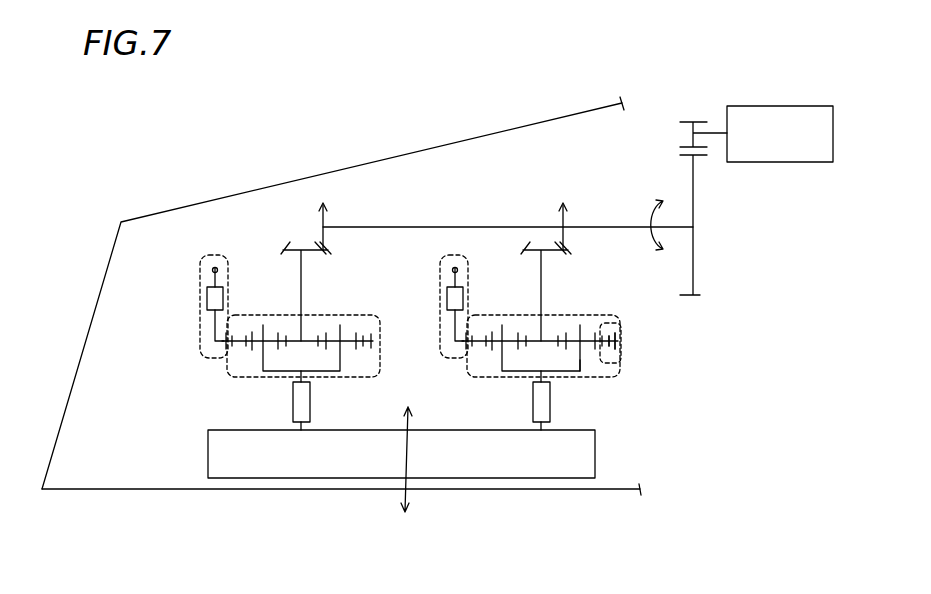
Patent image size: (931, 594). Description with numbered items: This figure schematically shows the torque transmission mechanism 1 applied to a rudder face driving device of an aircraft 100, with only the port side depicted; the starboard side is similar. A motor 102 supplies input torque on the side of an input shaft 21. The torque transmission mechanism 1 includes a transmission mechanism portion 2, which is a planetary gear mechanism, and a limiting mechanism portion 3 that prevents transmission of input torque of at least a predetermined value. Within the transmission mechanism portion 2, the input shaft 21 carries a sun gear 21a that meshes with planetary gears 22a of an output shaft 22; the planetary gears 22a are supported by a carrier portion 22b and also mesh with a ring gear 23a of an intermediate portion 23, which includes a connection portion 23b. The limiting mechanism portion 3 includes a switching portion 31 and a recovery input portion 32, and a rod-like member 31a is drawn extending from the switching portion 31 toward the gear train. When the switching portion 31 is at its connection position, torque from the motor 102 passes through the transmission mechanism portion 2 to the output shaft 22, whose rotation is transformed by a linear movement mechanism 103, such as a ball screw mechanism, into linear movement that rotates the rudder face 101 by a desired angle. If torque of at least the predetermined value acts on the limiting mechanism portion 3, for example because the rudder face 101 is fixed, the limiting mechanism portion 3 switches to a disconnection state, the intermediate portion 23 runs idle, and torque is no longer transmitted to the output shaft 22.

The aircraft 100 is at (385, 158).
The rudder face 101 is at (380, 458).
The motor 102 is at (800, 146).
The linear movement mechanism 103 is at (300, 401).
The torque transmission mechanism 1 is at (273, 229).
The transmission mechanism portion 2 is at (256, 316).
The limiting mechanism portion 3 is at (230, 280).
The input shaft 21 is at (303, 290).
The sun gear 21a is at (556, 330).
The output shaft 22 is at (256, 380).
The planetary gears 22a is at (566, 333).
The carrier portion 22b is at (583, 366).
The intermediate portion 23 is at (383, 356).
The ring gear 23a is at (610, 327).
The connection portion 23b is at (612, 346).
The switching portion 31 is at (207, 297).
The brake rod 31a is at (222, 341).
The recovery input portion 32 is at (211, 273).